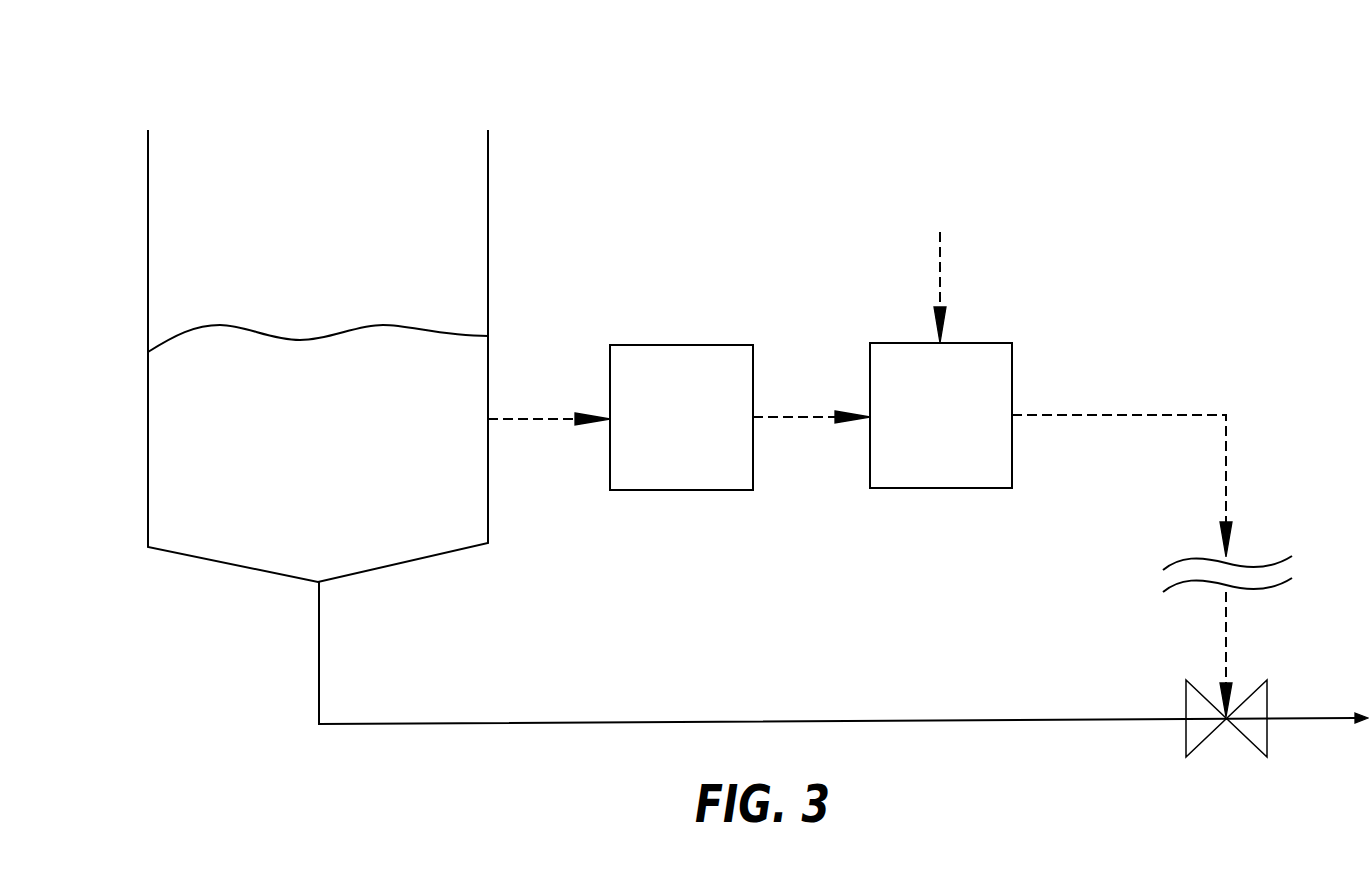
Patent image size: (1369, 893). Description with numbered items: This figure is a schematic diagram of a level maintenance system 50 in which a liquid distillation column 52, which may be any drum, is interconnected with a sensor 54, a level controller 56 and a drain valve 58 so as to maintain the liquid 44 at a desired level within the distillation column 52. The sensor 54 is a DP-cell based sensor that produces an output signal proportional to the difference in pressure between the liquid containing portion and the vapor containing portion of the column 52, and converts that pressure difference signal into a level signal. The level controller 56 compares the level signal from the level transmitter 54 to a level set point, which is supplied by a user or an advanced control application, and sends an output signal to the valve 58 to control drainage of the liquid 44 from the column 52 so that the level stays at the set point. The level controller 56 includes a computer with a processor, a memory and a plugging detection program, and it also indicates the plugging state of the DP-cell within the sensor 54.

The liquid 44 is at (238, 433).
The level maintenance system 50 is at (1097, 275).
The liquid distillation column 52 is at (148, 271).
The sensor 54 is at (717, 345).
The level controller 56 is at (988, 343).
The drain valve 58 is at (1196, 690).